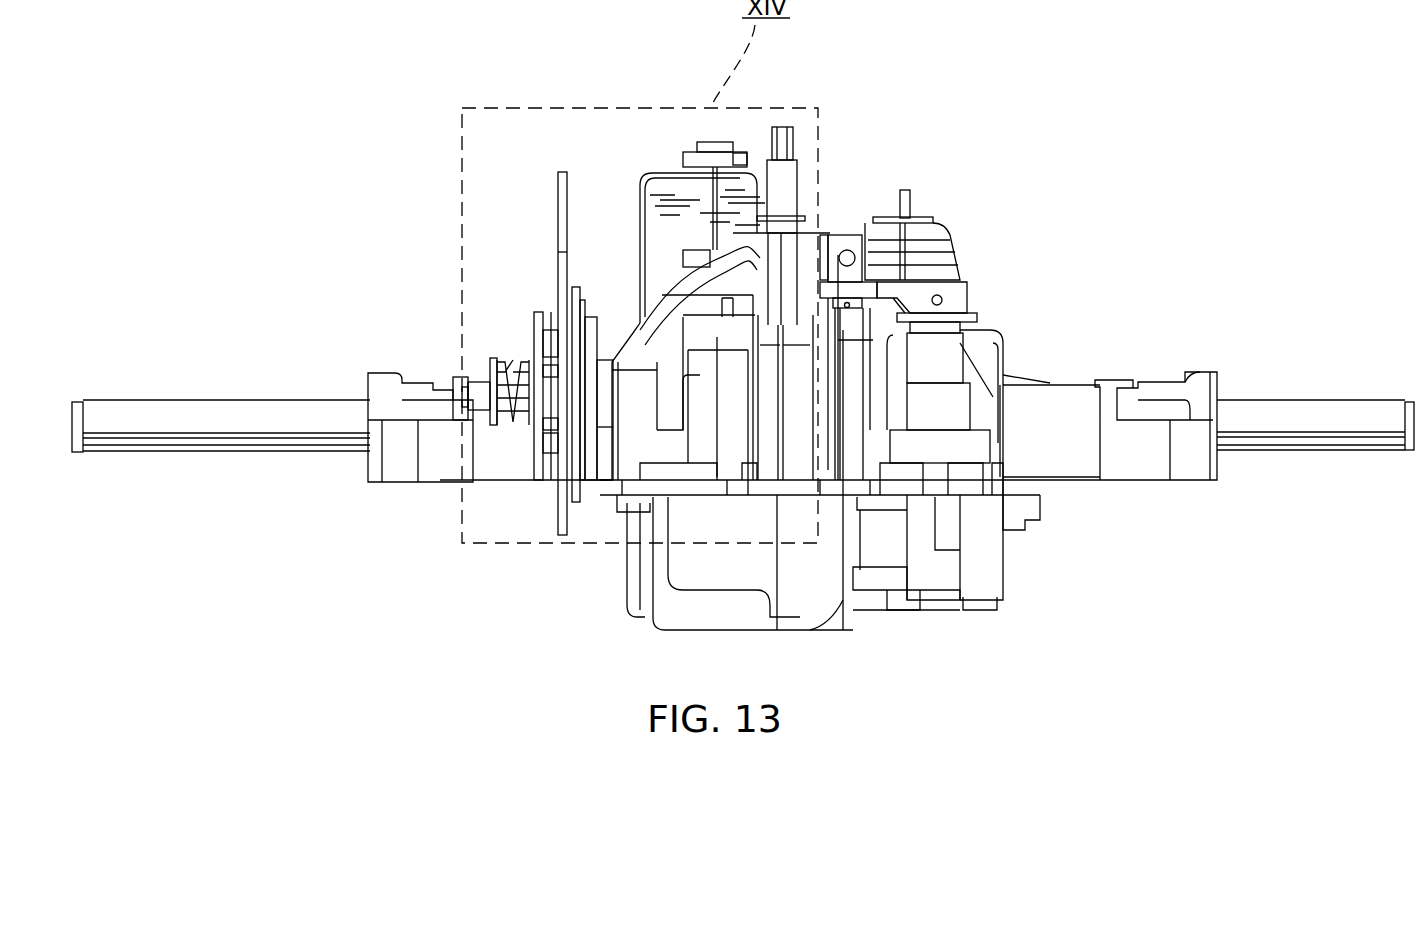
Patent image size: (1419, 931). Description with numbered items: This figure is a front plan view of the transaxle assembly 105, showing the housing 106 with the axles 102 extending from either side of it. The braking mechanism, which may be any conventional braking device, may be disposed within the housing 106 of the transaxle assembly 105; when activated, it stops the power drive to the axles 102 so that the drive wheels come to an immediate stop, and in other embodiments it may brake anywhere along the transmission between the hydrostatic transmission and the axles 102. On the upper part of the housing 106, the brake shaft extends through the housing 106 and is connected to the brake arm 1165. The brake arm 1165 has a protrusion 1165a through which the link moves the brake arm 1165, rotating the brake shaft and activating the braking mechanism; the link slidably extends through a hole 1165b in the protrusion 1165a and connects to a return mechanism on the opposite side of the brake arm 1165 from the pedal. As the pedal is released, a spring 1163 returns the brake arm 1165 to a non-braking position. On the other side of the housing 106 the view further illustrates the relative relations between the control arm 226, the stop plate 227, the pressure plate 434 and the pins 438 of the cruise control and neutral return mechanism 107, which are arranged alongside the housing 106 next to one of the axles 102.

The axle 102 is at (162, 415).
The transaxle assembly 105 is at (988, 299).
The housing 106 is at (638, 342).
The cruise control and neutral return mechanism 107 is at (533, 292).
The control arm 226 is at (560, 183).
The stop plate 227 is at (587, 313).
The pressure plate 434 is at (540, 482).
The pins 438 is at (573, 340).
The spring 1163 is at (977, 318).
The brake arm 1165 is at (960, 290).
The protrusion 1165a is at (853, 248).
The hole 1165b is at (846, 245).